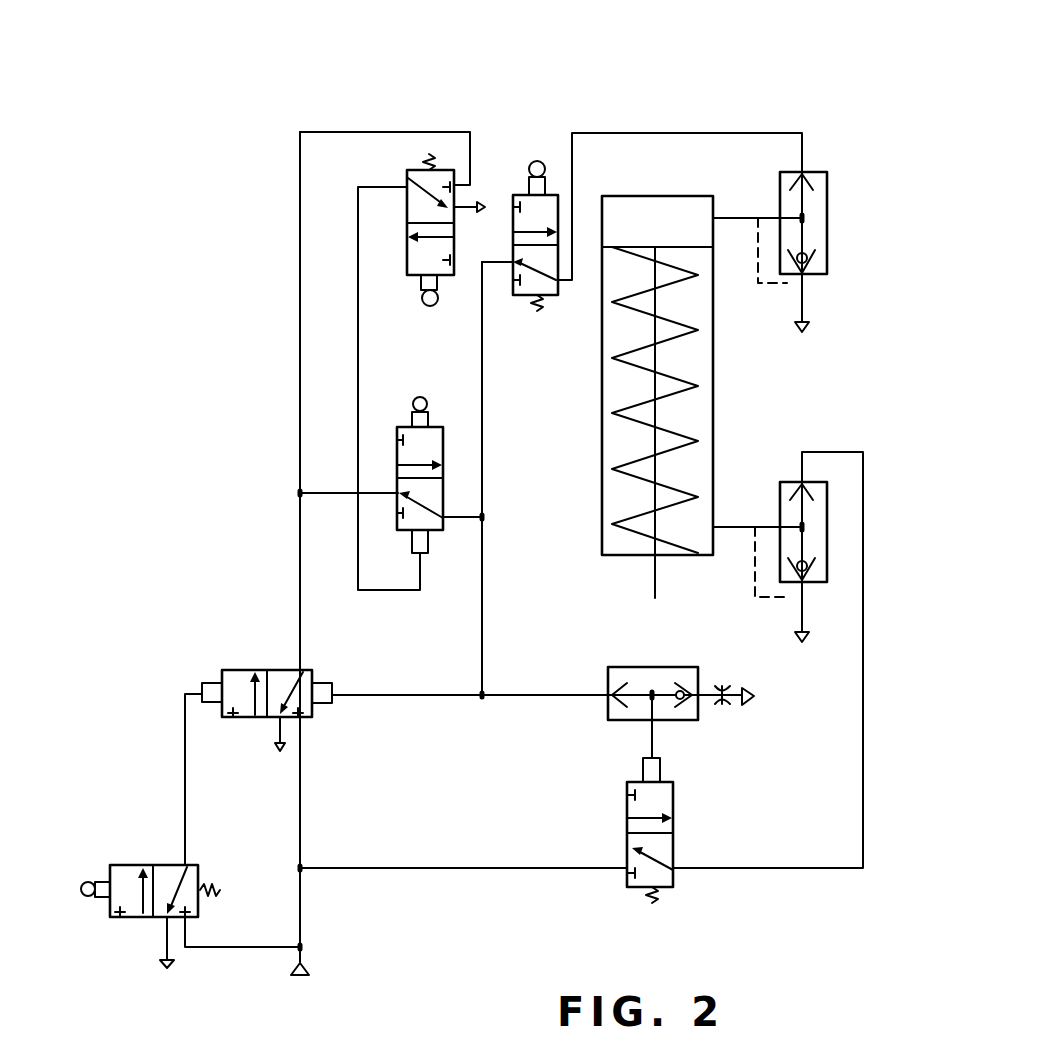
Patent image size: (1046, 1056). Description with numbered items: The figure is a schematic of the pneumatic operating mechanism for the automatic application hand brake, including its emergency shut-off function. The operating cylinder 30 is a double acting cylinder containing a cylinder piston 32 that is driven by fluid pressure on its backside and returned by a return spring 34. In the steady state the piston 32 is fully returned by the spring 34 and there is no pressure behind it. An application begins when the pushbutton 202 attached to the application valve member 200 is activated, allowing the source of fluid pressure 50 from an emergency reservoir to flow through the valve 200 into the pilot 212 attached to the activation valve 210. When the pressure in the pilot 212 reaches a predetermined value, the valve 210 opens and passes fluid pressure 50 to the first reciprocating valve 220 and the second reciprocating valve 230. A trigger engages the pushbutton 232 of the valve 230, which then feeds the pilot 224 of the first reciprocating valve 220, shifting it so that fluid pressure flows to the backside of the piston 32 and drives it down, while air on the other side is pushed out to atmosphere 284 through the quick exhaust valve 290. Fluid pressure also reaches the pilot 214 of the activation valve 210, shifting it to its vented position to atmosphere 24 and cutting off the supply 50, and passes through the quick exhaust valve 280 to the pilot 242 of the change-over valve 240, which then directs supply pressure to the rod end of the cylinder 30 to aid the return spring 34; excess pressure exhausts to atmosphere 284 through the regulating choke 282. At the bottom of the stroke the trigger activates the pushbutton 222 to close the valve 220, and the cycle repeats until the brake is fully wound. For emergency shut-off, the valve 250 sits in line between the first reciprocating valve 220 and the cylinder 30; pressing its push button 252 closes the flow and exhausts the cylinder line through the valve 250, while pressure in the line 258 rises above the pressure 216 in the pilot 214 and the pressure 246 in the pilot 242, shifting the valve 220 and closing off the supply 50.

The atmosphere 24 is at (277, 749).
The operating cylinder 30 is at (696, 397).
The cylinder piston 32 is at (687, 247).
The return spring 34 is at (630, 414).
The source of fluid pressure 50 is at (299, 976).
The application valve member 200 is at (149, 847).
The pushbutton 202 is at (85, 882).
The activation valve 210 is at (265, 678).
The pilot 212 is at (210, 683).
The pilot 214 is at (323, 683).
The pressure 216 is at (322, 704).
The first reciprocating valve 220 is at (414, 493).
The pushbutton 222 is at (416, 398).
The pilot 224 is at (411, 543).
The second reciprocating valve 230 is at (401, 244).
The pushbutton 232 is at (434, 306).
The change-over valve 240 is at (639, 799).
The pilot 242 is at (662, 765).
The pressure 246 is at (642, 770).
The emergency shut-off valve 250 is at (520, 200).
The push button 252 is at (536, 160).
The line 258 is at (483, 390).
The quick exhaust valve 280 is at (677, 665).
The choke 282 is at (722, 686).
The atmosphere 284 is at (750, 704).
The quick exhaust valve 290 is at (828, 190).